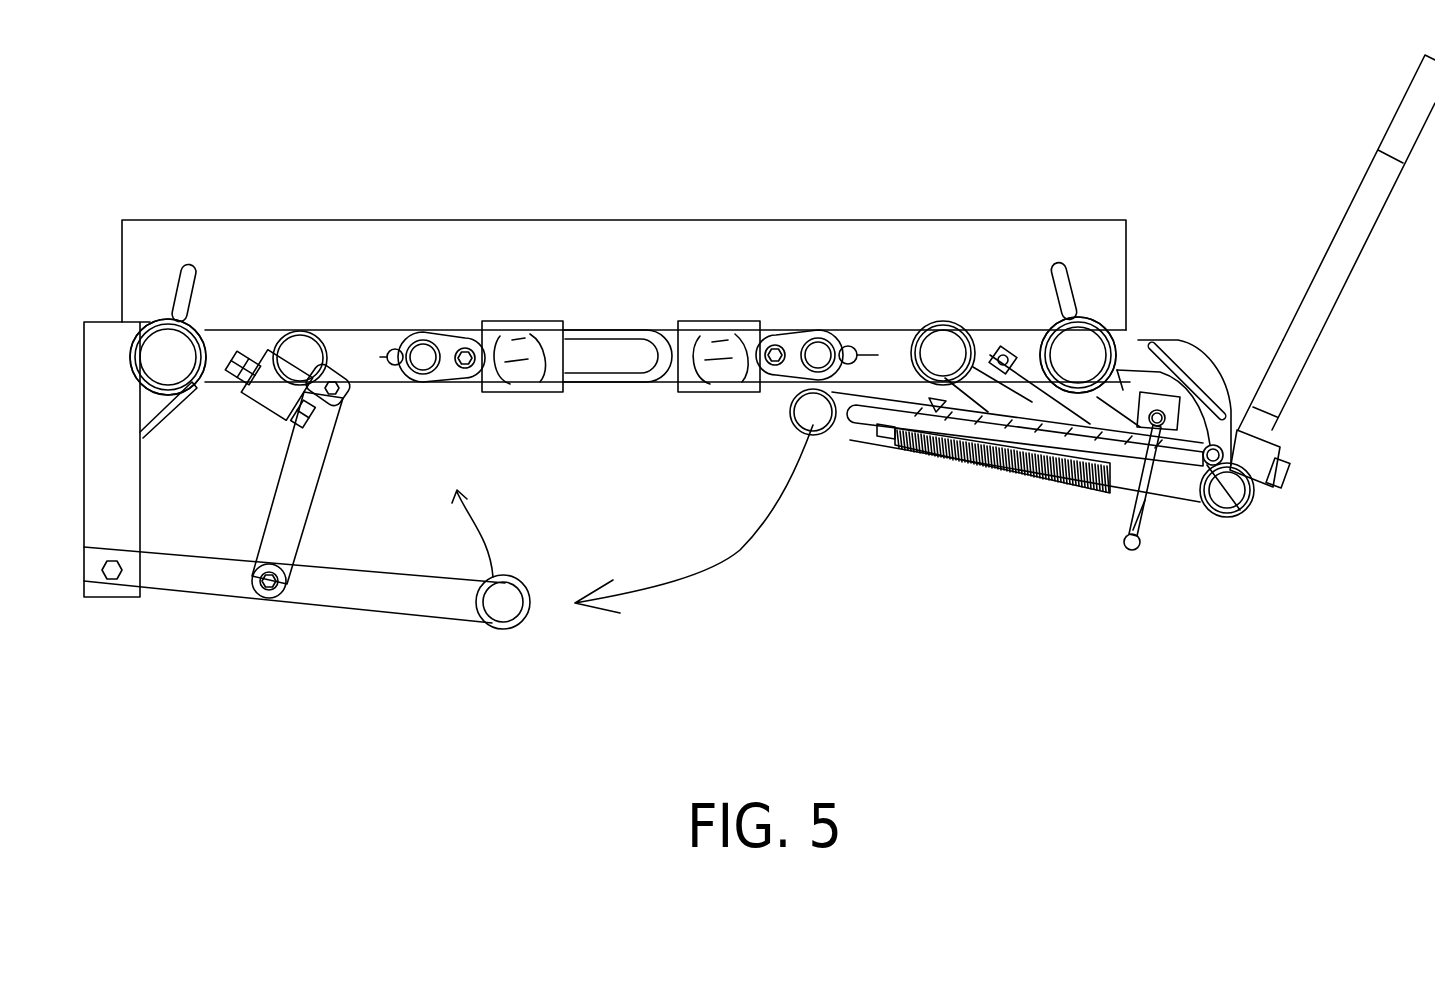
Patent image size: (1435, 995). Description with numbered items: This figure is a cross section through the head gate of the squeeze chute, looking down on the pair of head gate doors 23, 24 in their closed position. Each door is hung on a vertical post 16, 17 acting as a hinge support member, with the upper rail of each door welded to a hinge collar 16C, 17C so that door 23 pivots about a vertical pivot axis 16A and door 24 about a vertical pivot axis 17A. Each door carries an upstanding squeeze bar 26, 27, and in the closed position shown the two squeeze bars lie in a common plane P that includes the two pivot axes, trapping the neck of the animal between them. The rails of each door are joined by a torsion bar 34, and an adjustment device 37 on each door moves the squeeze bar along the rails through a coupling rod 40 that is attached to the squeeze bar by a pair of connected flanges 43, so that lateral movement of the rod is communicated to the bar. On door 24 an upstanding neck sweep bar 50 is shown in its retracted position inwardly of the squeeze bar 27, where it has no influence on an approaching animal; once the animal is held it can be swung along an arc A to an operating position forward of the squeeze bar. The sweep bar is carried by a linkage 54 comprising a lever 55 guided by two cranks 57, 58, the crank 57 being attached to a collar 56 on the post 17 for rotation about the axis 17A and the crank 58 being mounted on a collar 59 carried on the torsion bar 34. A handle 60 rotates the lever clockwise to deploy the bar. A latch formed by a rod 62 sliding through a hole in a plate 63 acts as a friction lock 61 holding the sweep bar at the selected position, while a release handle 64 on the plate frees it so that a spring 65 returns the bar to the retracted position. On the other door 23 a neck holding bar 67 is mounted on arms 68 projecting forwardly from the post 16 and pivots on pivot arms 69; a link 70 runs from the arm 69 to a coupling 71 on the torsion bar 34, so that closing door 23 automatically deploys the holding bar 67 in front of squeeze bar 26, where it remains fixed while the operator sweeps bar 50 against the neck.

The vertical post 16 is at (181, 356).
The pivot axis 16A is at (165, 349).
The hinge collar 16C is at (193, 330).
The vertical post 17 is at (1080, 353).
The pivot axis 17A is at (1080, 353).
The hinge collar 17C is at (1078, 344).
The head gate door 23 is at (400, 284).
The head gate door 24 is at (1033, 200).
The squeeze bar 26 is at (523, 378).
The squeeze bar 27 is at (700, 370).
The torsion bar 34 is at (342, 402).
The adjustment device 37 is at (395, 366).
The coupling rod 40 is at (438, 384).
The connected flanges 43 is at (437, 338).
The neck sweep bar 50 is at (813, 425).
The linkage 54 is at (1076, 546).
The lever 55 is at (1177, 483).
The collar 56 is at (1062, 262).
The crank 57 is at (1123, 408).
The crank 58 is at (1010, 403).
The collar 59 is at (930, 320).
The handle 60 is at (1332, 311).
The friction lock 61 is at (1038, 451).
The rod 62 is at (1240, 510).
The plate 63 is at (1140, 540).
The release handle 64 is at (1140, 523).
The spring 65 is at (1057, 440).
The neck holding bar 67 is at (517, 640).
The arms 68 is at (118, 496).
The pivot arms 69 is at (198, 585).
The link 70 is at (297, 507).
The coupling 71 is at (281, 405).
The common plane P is at (729, 337).
The arc A is at (695, 580).